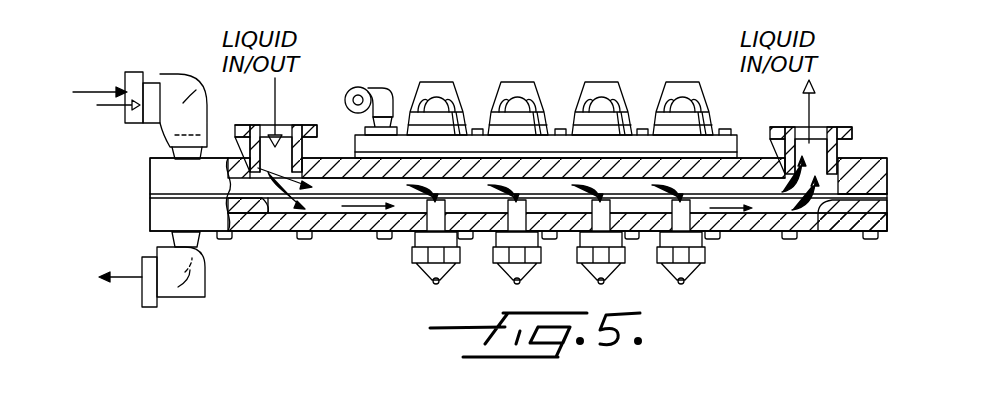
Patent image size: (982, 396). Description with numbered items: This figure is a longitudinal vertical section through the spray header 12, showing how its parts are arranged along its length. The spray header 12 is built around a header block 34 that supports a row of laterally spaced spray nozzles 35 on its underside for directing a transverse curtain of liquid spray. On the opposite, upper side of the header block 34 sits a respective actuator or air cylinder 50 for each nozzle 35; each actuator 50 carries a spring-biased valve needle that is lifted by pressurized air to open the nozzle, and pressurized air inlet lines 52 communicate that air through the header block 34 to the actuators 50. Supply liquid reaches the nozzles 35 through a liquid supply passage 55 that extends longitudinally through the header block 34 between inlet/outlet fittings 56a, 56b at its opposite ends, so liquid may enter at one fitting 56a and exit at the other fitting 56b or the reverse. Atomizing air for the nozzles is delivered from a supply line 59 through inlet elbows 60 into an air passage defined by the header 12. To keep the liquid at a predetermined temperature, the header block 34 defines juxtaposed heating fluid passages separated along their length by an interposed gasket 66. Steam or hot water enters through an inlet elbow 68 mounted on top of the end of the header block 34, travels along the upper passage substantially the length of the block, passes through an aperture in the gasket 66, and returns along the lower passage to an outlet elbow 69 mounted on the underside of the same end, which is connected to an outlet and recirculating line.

The spray header 12 is at (784, 244).
The header block 34 is at (263, 232).
The spray nozzles 35 is at (500, 264).
The actuator or air cylinder 50 is at (513, 83).
The pressurized air inlet lines 52 is at (391, 97).
The liquid supply passage 55 is at (326, 209).
The inlet/outlet fitting 56a is at (247, 125).
The inlet/outlet fitting 56b is at (847, 127).
The supply line 59 is at (78, 92).
The inlet elbows 60 is at (133, 72).
The gasket 66 is at (151, 201).
The inlet elbow 68 is at (170, 113).
The outlet elbow 69 is at (173, 298).